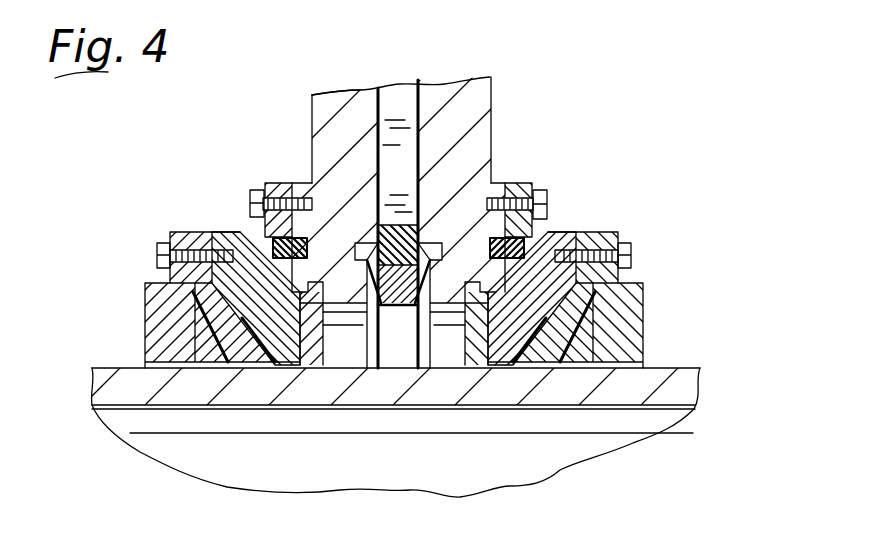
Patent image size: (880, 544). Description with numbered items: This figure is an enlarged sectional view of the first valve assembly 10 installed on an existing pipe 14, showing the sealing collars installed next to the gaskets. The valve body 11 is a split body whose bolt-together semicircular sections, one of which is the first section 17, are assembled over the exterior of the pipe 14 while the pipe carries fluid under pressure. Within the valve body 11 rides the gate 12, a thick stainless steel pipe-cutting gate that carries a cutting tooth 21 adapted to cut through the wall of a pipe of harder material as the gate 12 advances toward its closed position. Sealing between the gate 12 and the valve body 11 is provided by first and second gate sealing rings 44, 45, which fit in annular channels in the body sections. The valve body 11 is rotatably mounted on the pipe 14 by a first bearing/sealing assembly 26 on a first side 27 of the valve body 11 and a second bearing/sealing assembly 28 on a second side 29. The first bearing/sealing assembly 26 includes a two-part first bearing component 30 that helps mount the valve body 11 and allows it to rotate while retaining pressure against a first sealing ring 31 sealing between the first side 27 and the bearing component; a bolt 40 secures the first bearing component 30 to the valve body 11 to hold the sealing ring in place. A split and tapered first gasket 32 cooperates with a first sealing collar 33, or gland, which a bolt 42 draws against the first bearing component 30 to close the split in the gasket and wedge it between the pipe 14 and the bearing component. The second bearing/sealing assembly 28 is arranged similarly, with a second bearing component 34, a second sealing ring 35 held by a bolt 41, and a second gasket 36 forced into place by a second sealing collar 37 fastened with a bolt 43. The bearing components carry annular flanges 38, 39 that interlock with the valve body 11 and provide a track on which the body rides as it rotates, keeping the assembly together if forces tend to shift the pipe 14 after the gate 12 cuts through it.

The first valve assembly 10 is at (657, 118).
The valve body 11 is at (494, 104).
The gate 12 is at (424, 103).
The pipe 14 is at (106, 366).
The first semicircular section 17 is at (313, 106).
The cutting tooth 21 is at (402, 306).
The first bearing/sealing assembly 26 is at (167, 174).
The first side of the valve body 27 is at (311, 166).
The second bearing/sealing assembly 28 is at (648, 184).
The second side of the valve body 29 is at (493, 162).
The first bearing component 30 is at (232, 230).
The first sealing ring 31 is at (272, 242).
The first gasket 32 is at (207, 287).
The first sealing collar 33 is at (155, 318).
The second bearing component 34 is at (548, 236).
The second sealing ring 35 is at (446, 242).
The second gasket 36 is at (623, 302).
The second sealing collar 37 is at (632, 347).
The annular flange 38 is at (316, 290).
The annular flange 39 is at (470, 288).
The bolt 40 is at (251, 191).
The bolt 41 is at (546, 193).
The bolt 42 is at (157, 252).
The bolt 43 is at (633, 255).
The first gate sealing ring 44 is at (367, 312).
The second gate sealing ring 45 is at (420, 317).